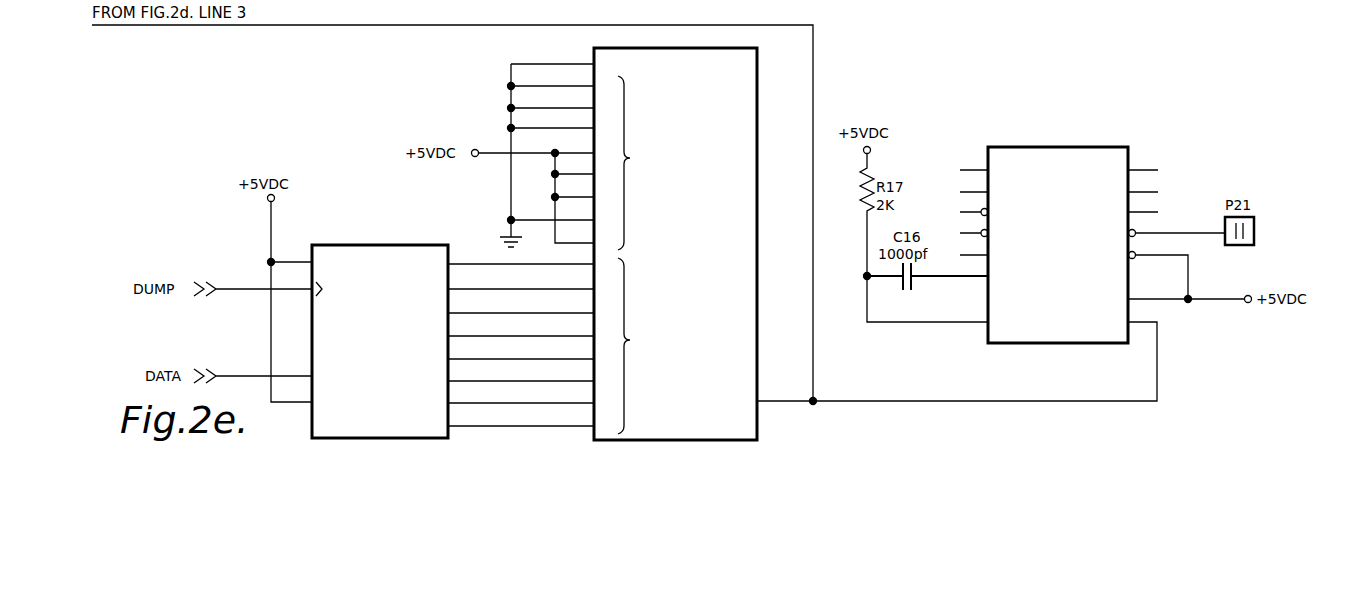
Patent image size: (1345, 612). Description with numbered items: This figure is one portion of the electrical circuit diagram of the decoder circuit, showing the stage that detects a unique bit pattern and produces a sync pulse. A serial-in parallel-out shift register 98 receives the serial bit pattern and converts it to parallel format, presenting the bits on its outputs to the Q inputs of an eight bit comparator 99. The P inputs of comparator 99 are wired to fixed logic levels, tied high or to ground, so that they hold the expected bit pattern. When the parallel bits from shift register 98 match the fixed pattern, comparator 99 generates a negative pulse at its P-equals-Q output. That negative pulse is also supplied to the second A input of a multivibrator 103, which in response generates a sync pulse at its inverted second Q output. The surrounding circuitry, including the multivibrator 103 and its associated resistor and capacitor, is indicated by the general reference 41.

The serial-in parallel-out shift register 98 is at (370, 245).
The 8 bit comparator 99 is at (757, 92).
The multivibrator 103 is at (1048, 147).
The dump detector circuit 41 is at (1005, 81).